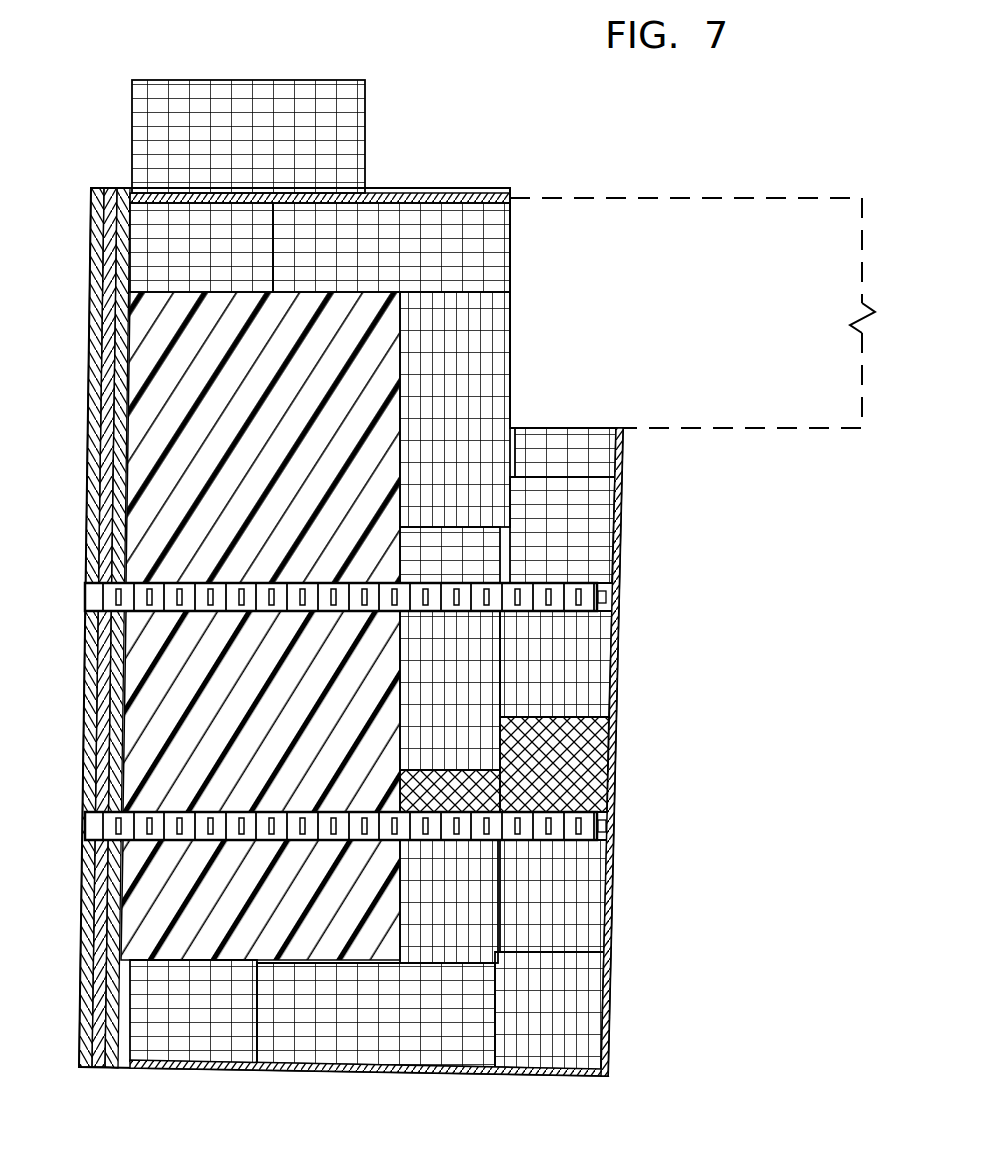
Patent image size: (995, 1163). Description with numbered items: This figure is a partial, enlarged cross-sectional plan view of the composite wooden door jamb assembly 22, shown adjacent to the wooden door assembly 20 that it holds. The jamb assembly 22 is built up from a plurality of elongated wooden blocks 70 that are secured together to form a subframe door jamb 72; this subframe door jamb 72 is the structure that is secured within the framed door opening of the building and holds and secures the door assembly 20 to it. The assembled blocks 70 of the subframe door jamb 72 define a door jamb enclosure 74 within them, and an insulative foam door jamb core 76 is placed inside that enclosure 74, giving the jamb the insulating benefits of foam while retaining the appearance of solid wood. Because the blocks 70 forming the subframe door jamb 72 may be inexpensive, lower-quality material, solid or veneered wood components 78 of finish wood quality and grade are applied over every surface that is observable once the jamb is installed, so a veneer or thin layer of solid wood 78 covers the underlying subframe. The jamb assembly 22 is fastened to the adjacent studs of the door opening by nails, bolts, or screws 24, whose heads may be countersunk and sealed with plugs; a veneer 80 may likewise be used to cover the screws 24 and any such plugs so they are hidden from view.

The wooden door assembly 20 is at (678, 222).
The wooden door jamb assembly 22 is at (624, 788).
The screws 24 is at (615, 627).
The elongated wooden blocks 70 is at (212, 92).
The subframe door jamb 72 is at (454, 236).
The door jamb enclosure 74 is at (172, 463).
The insulative foam door jamb core 76 is at (135, 548).
The veneered wood components 78 is at (416, 584).
The veneer 80 is at (620, 753).